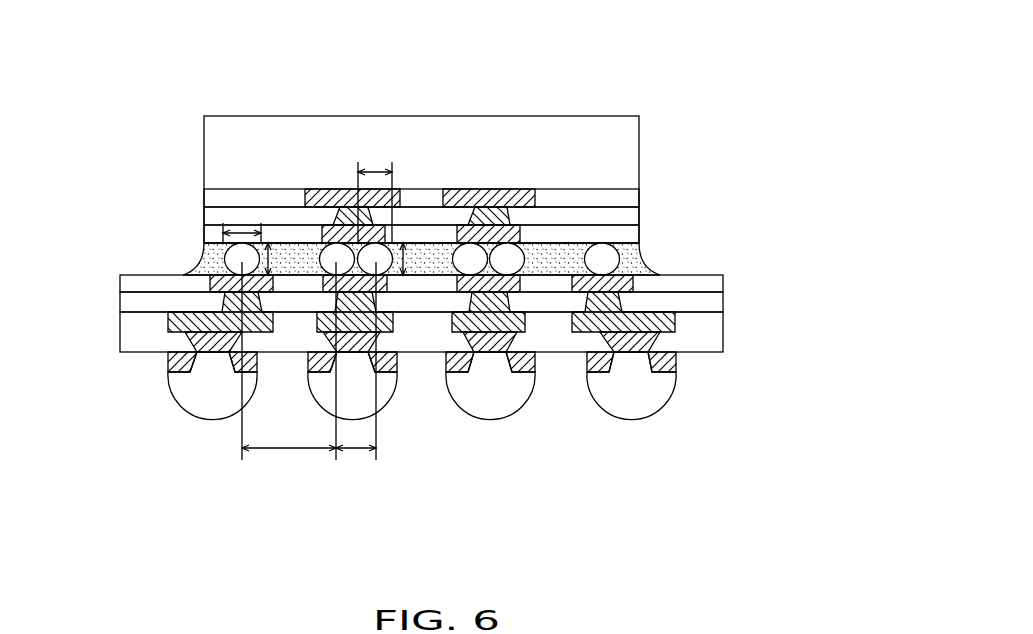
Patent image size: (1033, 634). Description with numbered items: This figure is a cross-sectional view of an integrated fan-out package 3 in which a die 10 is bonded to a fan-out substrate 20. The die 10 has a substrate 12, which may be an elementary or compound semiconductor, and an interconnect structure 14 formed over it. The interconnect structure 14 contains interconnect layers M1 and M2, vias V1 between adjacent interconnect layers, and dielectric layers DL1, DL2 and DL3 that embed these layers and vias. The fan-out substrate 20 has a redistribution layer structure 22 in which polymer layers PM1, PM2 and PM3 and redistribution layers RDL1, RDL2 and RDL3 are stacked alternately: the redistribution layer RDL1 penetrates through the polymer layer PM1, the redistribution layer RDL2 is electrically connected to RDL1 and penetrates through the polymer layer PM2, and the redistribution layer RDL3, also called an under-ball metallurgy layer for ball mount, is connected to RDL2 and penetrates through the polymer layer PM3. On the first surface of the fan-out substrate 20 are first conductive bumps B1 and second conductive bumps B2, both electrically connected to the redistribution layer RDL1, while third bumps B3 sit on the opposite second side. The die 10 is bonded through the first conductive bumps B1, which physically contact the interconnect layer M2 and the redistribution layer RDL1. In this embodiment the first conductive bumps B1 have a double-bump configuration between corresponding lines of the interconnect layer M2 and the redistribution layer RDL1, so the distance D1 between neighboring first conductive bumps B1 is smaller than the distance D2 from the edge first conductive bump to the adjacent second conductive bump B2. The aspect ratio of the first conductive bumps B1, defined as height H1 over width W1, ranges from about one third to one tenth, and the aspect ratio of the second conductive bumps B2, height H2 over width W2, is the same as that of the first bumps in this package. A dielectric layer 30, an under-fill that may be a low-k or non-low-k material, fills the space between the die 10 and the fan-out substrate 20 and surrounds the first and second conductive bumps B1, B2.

The integrated fan-out package 3 is at (757, 60).
The die 10 is at (700, 115).
The substrate 12 is at (615, 175).
The interconnect structure 14 is at (449, 325).
The fan-out substrate 20 is at (796, 420).
The redistribution layer structure 22 is at (420, 411).
The dielectric layer 30 is at (200, 265).
The interconnect layer M1 is at (472, 196).
The via V1 is at (494, 216).
The interconnect layer M2 is at (522, 236).
The dielectric layer DL1 is at (633, 195).
The dielectric layer DL2 is at (633, 217).
The dielectric layer DL3 is at (633, 235).
The redistribution layer RDL1 is at (637, 284).
The redistribution layer RDL2 is at (667, 322).
The redistribution layer RDL3 is at (668, 360).
The polymer layer PM1 is at (130, 283).
The polymer layer PM2 is at (130, 300).
The polymer layer PM3 is at (132, 335).
The first conductive bumps B1 is at (422, 259).
The second conductive bumps B2 is at (422, 259).
The third bumps B3 is at (422, 386).
The width of first conductive bumps W1 is at (375, 190).
The width of second conductive bumps W2 is at (238, 229).
The height of first conductive bumps H1 is at (418, 259).
The height of second conductive bumps H2 is at (282, 259).
The distance between neighboring first conductive bumps D1 is at (356, 372).
The distance from edge first conductive bump to adjacent second conductive bump D2 is at (289, 372).